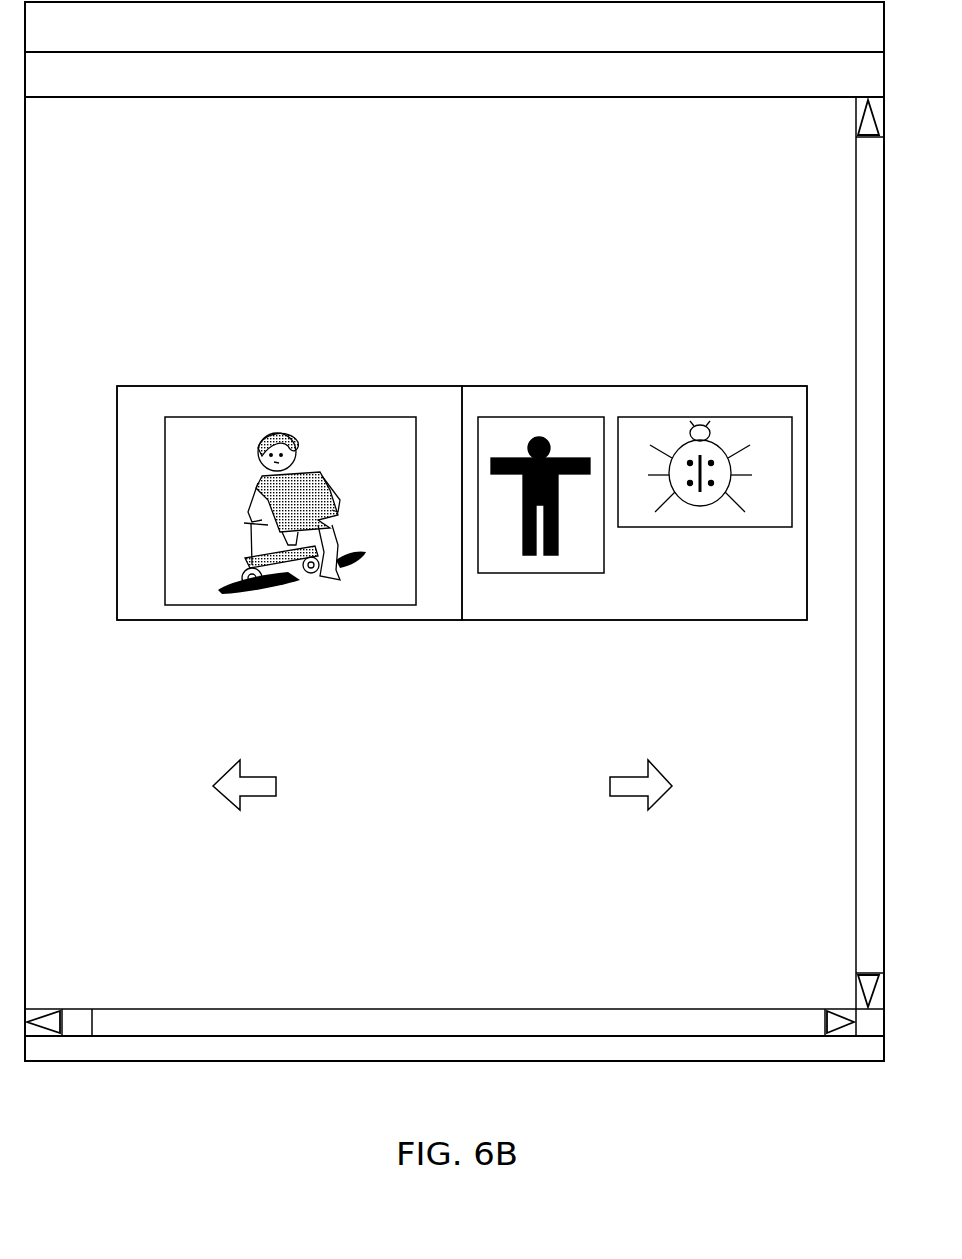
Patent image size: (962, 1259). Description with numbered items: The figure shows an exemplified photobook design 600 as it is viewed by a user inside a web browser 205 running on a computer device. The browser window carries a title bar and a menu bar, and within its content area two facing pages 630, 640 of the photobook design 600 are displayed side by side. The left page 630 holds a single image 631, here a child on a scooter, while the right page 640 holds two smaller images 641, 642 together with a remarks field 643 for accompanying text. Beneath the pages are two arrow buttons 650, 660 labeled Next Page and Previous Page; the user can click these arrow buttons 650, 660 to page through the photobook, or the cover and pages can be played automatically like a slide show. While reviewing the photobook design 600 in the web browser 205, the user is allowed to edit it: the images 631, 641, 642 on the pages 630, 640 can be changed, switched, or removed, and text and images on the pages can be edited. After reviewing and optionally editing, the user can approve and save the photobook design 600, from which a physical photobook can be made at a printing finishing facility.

The web browser 205 is at (454, 531).
The photobook design 600 is at (160, 373).
The page 630 is at (338, 398).
The image 631 is at (363, 590).
The page 640 is at (693, 400).
The image 641 is at (573, 558).
The image 642 is at (657, 434).
The remarks field 643 is at (744, 606).
The arrow button 650 is at (676, 762).
The arrow button 660 is at (214, 762).